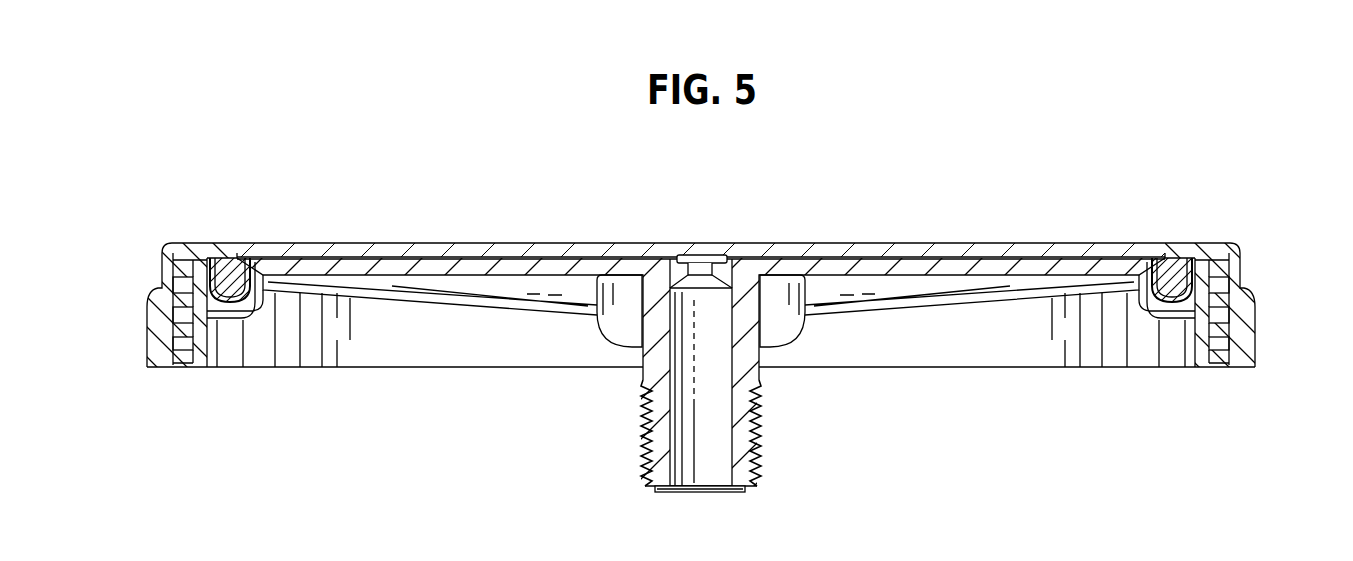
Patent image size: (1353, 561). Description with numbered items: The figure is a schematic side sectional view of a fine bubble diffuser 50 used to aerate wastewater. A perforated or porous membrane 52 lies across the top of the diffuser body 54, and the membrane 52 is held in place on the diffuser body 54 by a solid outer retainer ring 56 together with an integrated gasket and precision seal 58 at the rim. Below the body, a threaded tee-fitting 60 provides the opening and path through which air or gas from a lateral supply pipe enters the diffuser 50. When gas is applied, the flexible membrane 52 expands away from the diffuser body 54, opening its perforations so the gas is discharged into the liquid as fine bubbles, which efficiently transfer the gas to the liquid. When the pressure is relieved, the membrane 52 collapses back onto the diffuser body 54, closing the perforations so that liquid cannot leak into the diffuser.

The fine bubble diffuser 50 is at (228, 85).
The perforated membrane 52 is at (860, 252).
The diffuser body 54 is at (860, 275).
The outer retainer ring 56 is at (204, 241).
The integrated gasket and precision seal 58 is at (1150, 307).
The tee-fitting 60 is at (757, 458).